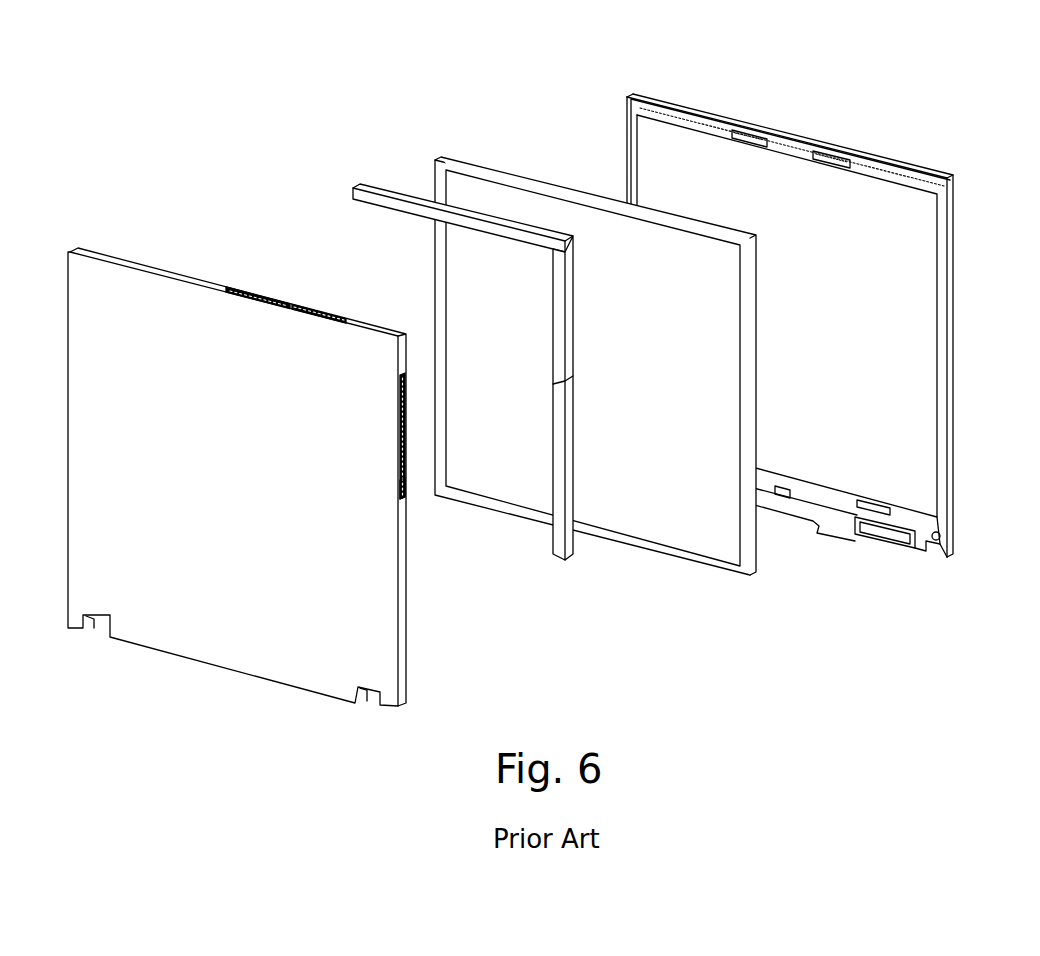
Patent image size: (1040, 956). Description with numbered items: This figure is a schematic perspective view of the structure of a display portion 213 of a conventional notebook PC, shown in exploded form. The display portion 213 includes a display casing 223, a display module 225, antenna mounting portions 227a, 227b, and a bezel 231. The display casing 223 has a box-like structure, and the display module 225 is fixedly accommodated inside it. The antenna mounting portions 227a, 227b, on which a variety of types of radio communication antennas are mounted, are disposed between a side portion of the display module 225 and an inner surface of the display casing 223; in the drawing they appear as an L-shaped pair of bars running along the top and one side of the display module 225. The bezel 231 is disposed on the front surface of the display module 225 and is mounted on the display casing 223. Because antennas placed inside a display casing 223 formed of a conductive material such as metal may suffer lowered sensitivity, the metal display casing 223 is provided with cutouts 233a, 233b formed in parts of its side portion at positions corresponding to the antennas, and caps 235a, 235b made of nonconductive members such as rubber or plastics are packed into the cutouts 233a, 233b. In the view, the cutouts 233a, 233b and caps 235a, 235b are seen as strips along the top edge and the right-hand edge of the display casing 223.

The display portion 213 is at (462, 120).
The display casing 223 is at (66, 262).
The display module 225 is at (695, 222).
The antenna mounting portion 227a is at (378, 182).
The antenna mounting portion 227b is at (575, 537).
The bezel 231 is at (957, 205).
The cutout 233a is at (303, 307).
The cutout 233b is at (408, 482).
The cap 235a is at (243, 292).
The cap 235b is at (408, 497).